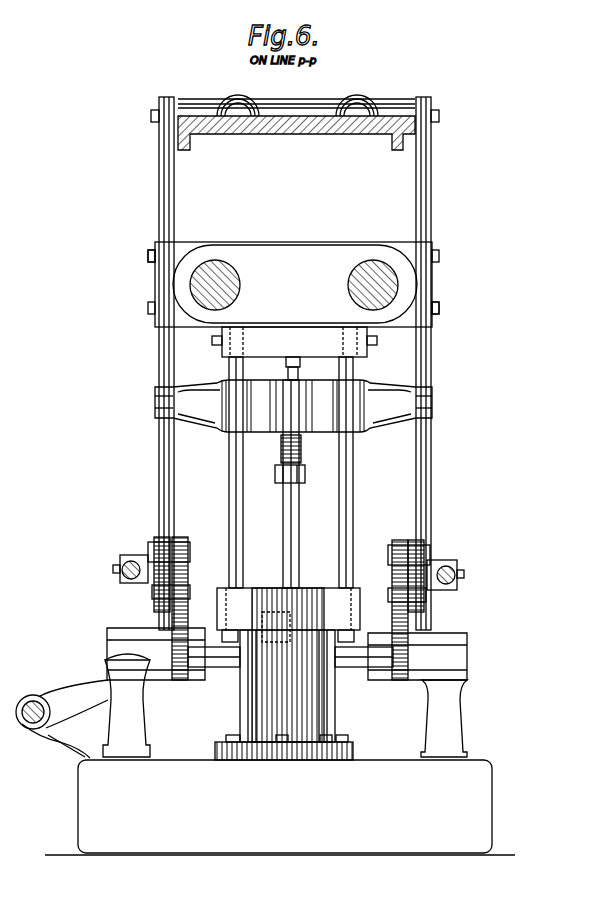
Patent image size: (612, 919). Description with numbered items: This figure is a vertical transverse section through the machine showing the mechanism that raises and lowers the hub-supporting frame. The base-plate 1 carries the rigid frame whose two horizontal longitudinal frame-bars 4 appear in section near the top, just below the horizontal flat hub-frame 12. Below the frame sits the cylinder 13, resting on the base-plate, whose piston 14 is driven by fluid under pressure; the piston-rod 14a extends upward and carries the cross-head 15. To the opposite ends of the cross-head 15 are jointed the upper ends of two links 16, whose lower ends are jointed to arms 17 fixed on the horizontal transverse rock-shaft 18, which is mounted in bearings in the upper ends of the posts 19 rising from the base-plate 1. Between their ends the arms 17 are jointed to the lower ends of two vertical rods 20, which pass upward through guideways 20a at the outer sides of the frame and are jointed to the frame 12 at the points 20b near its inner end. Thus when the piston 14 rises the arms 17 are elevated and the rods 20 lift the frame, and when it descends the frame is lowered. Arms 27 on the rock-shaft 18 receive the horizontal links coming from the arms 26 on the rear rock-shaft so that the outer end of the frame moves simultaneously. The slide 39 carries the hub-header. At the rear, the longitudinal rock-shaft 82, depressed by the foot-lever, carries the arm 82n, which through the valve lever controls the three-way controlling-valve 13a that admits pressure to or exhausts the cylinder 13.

The base-plate 1 is at (280, 807).
The frame-bars 4 is at (228, 278).
The hub-supporting frame 12 is at (304, 136).
The cylinder 13 is at (240, 706).
The controlling-valve 13a is at (262, 744).
The piston 14 is at (277, 645).
The piston-rod 14a is at (298, 522).
The cross-head 15 is at (308, 395).
The links 16 is at (158, 503).
The arms 17 is at (180, 569).
The rock-shaft 18 is at (345, 668).
The posts 19 is at (285, 705).
The vertical rods 20 is at (160, 182).
The guideways 20a is at (451, 284).
The joints 20b is at (448, 122).
The arms 26 is at (118, 575).
The arms 27 is at (160, 619).
The slide 39 is at (345, 250).
The rock-shaft 82 is at (32, 730).
The arm 82n is at (65, 719).